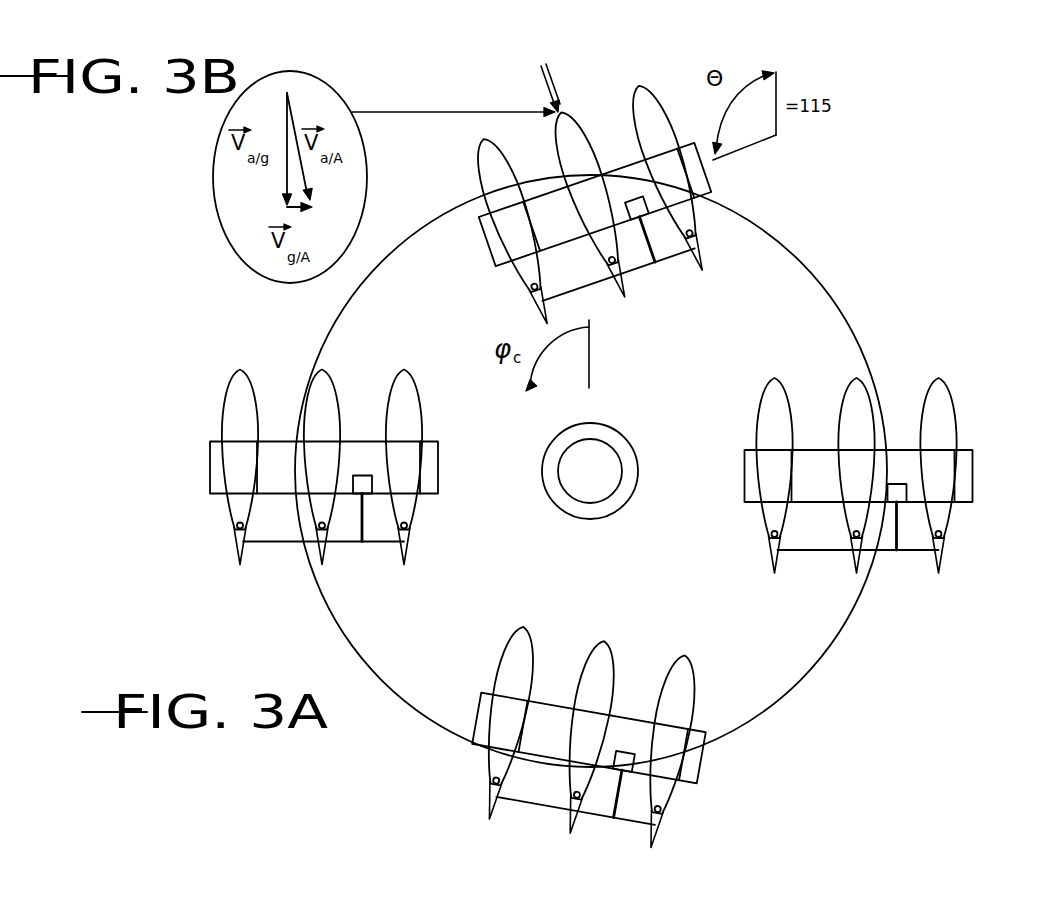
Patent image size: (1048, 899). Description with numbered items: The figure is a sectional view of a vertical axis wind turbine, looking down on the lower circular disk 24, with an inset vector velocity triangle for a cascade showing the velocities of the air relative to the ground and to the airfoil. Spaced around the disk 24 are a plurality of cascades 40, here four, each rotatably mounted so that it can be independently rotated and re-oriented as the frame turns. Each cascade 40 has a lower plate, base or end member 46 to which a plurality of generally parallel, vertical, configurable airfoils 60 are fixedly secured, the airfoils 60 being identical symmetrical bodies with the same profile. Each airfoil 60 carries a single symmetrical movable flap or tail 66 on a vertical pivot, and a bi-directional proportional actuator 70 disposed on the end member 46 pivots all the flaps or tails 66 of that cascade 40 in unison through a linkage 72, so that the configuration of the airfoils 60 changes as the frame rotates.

The lower circular disk 24 is at (787, 663).
The cascade 40 is at (203, 559).
The lower plate, base or end member 46 is at (967, 478).
The configurable airfoil 60 is at (240, 390).
The movable flap or tail 66 is at (700, 263).
The bi-directional proportional actuator 70 is at (360, 475).
The linkage 72 is at (345, 543).